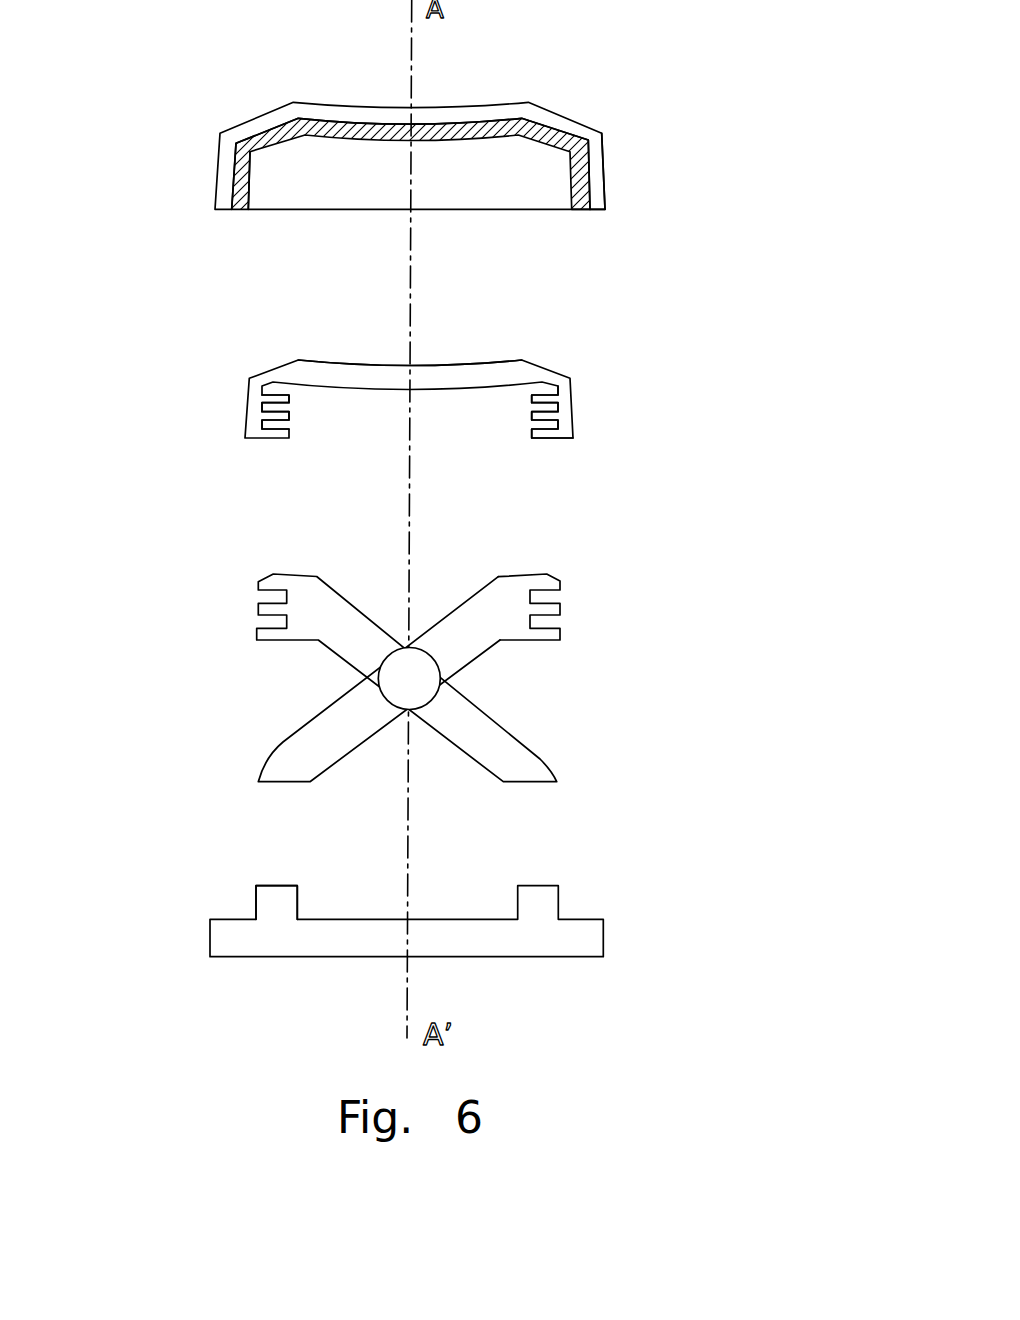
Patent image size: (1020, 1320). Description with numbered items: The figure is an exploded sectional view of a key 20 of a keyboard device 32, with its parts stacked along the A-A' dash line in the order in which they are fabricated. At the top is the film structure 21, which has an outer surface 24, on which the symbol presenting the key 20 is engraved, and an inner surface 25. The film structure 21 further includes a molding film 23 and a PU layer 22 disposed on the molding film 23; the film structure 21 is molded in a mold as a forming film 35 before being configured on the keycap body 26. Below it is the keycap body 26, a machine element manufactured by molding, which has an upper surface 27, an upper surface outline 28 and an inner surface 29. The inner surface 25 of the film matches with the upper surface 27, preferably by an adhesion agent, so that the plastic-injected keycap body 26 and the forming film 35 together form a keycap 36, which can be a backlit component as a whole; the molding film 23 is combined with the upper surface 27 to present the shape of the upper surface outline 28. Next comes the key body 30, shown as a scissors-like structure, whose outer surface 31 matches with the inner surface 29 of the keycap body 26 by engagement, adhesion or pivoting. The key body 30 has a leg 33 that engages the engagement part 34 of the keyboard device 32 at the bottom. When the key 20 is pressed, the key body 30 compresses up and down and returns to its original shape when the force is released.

The key 20 is at (429, 154).
The film structure 21 is at (550, 98).
The PU layer 22 is at (598, 200).
The molding film 23 is at (582, 183).
The outer surface 24 is at (603, 162).
The inner surface 25 is at (250, 180).
The keycap body 26 is at (573, 427).
The upper surface 27 is at (452, 380).
The upper surface outline 28 is at (358, 363).
The inner surface 29 is at (271, 415).
The key body 30 is at (424, 634).
The outer surface 31 is at (522, 576).
The keyboard device 32 is at (411, 889).
The leg 33 is at (267, 760).
The engagement part 34 is at (256, 900).
The forming film 35 is at (606, 198).
The keycap 36 is at (690, 243).